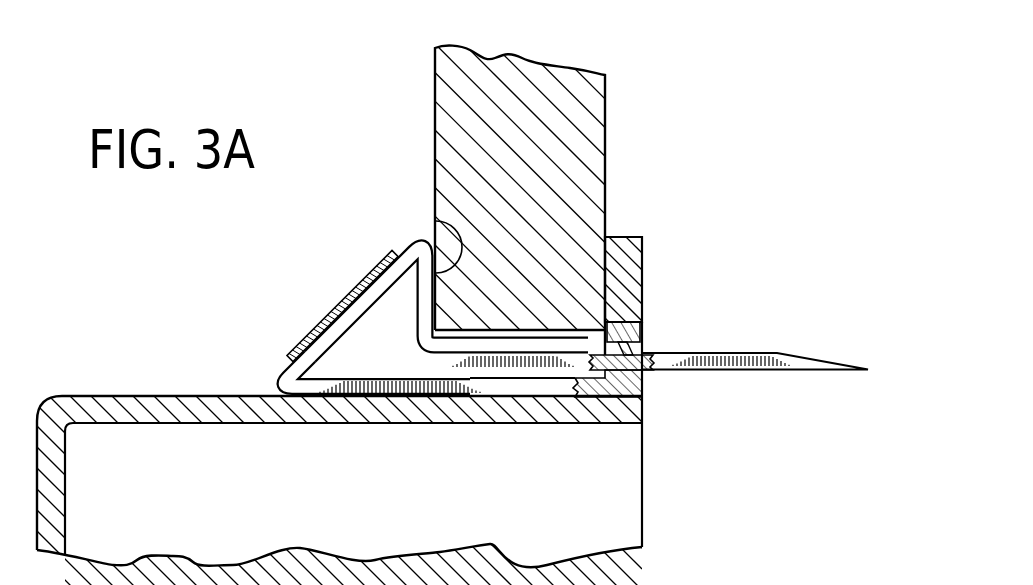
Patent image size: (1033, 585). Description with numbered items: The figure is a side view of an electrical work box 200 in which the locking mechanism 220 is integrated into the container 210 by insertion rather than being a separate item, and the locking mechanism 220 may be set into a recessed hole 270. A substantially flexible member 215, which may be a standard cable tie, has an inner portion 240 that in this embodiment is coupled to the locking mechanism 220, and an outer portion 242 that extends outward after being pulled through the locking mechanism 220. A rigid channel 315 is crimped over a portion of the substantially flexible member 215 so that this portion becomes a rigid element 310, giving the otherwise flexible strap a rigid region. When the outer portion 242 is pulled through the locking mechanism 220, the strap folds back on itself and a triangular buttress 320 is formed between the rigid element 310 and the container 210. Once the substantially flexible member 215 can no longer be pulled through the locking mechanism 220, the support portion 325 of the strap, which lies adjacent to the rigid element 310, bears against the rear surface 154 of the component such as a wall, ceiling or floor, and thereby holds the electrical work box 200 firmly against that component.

The rear surface 154 is at (434, 145).
The electrical work box 200 is at (662, 246).
The container 210 is at (623, 500).
The substantially flexible member 215 is at (720, 365).
The locking mechanism 220 is at (645, 333).
The inner portion 240 is at (592, 400).
The outer portion 242 is at (763, 353).
The recessed hole 270 is at (645, 318).
The rigid element 310 is at (349, 277).
The rigid channel 315 is at (328, 308).
The triangular buttress 320 is at (256, 352).
The support portion 325 is at (435, 221).